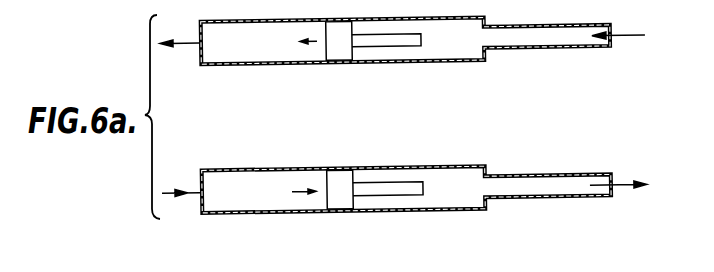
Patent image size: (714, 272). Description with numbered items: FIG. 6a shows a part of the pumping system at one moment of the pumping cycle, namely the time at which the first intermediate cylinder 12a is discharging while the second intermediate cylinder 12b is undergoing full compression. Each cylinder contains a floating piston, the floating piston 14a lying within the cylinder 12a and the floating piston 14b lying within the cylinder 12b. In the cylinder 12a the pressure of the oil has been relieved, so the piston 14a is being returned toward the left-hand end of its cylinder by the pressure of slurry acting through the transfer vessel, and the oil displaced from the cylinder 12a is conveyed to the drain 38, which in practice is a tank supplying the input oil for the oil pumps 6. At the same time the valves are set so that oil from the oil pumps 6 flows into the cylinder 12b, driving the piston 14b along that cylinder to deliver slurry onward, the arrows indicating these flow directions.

The drain 38 is at (179, 31).
The oil pumps 6 is at (181, 181).
The intermediate cylinder 12a is at (300, 65).
The floating piston 14a is at (338, 50).
The intermediate cylinder 12b is at (311, 214).
The floating piston 14b is at (343, 195).